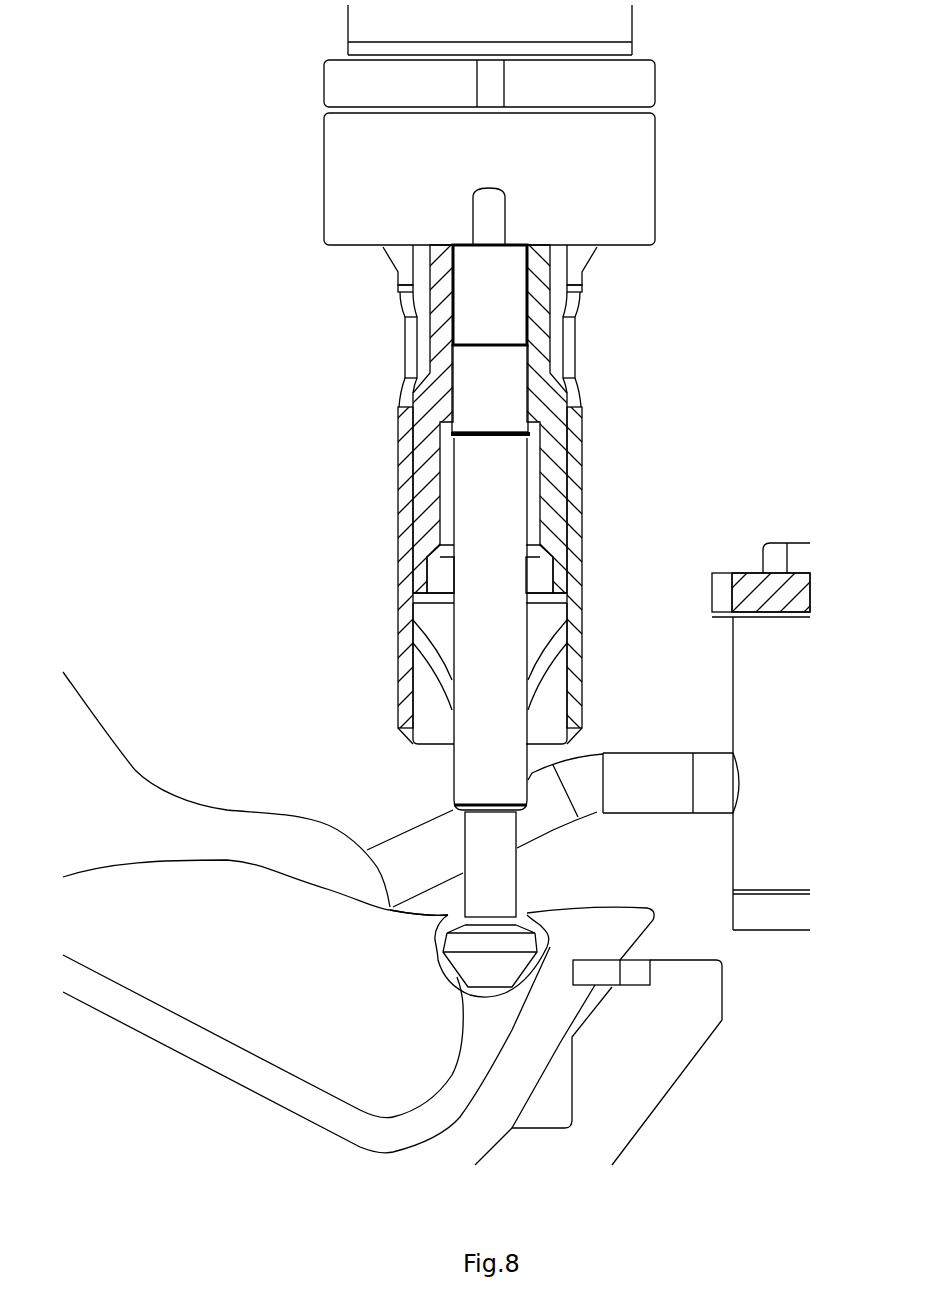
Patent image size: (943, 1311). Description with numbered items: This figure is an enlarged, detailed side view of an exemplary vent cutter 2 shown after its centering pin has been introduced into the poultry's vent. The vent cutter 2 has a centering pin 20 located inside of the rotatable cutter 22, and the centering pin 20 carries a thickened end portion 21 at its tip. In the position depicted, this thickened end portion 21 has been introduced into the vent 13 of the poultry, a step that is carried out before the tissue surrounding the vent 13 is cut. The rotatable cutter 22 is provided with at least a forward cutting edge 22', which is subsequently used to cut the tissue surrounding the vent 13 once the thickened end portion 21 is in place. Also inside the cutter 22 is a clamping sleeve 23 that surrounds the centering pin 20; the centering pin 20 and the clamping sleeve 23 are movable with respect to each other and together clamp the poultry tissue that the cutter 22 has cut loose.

The vent cutter 2 is at (276, 384).
The cutter 22 is at (420, 494).
The forward cutting edge 22' is at (441, 761).
The clamping sleeve 23 is at (564, 578).
The centering pin 20 is at (520, 865).
The thickened end portion 21 is at (452, 970).
The vent 13 is at (537, 906).